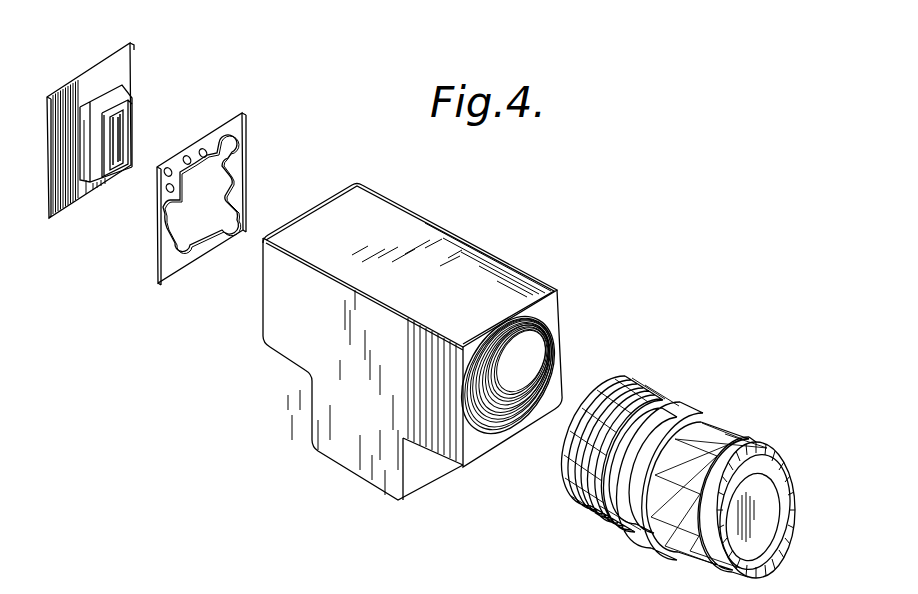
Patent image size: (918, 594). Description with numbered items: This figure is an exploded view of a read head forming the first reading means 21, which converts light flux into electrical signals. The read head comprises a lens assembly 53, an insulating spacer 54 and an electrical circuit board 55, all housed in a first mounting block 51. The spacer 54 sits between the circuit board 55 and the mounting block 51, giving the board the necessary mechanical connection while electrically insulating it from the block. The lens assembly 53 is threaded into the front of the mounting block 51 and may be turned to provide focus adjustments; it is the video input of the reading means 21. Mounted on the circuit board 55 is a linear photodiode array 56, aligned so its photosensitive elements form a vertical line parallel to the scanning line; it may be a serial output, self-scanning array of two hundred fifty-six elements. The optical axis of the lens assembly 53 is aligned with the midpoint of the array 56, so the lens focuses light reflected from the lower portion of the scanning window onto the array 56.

The first reading means 21 is at (171, 538).
The first mounting block 51 is at (314, 410).
The lens assembly 53 is at (601, 520).
The insulating spacer 54 is at (243, 129).
The electrical circuit board 55 is at (120, 64).
The linear photodiode array 56 is at (121, 168).